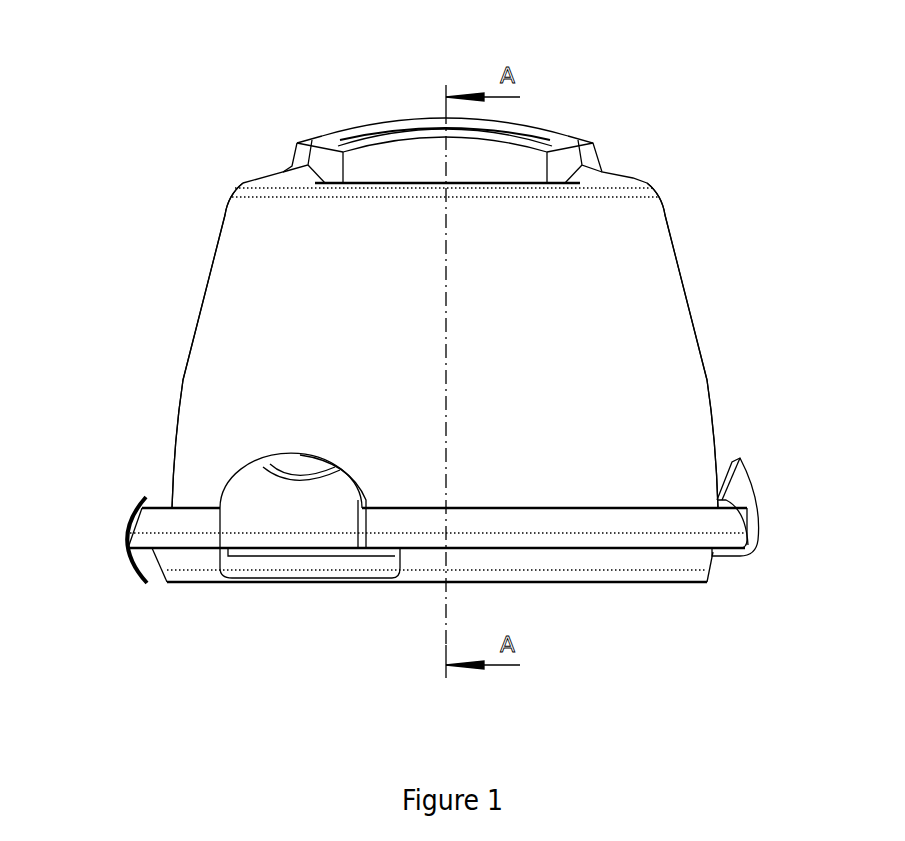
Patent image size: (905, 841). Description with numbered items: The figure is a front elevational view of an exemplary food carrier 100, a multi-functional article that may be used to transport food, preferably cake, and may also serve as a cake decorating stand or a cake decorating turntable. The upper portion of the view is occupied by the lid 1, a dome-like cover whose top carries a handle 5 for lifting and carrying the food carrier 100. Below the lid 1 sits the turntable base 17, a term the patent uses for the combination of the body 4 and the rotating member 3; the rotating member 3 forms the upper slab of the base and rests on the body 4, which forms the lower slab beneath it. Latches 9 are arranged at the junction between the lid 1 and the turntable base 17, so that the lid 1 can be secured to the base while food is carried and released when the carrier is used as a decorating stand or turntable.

The food carrier 100 is at (212, 140).
The lid 1 is at (696, 242).
The handle 5 is at (374, 97).
The rotating member 3 is at (569, 549).
The body 4 is at (671, 576).
The latches 9 is at (284, 548).
The turntable base 17 is at (112, 542).